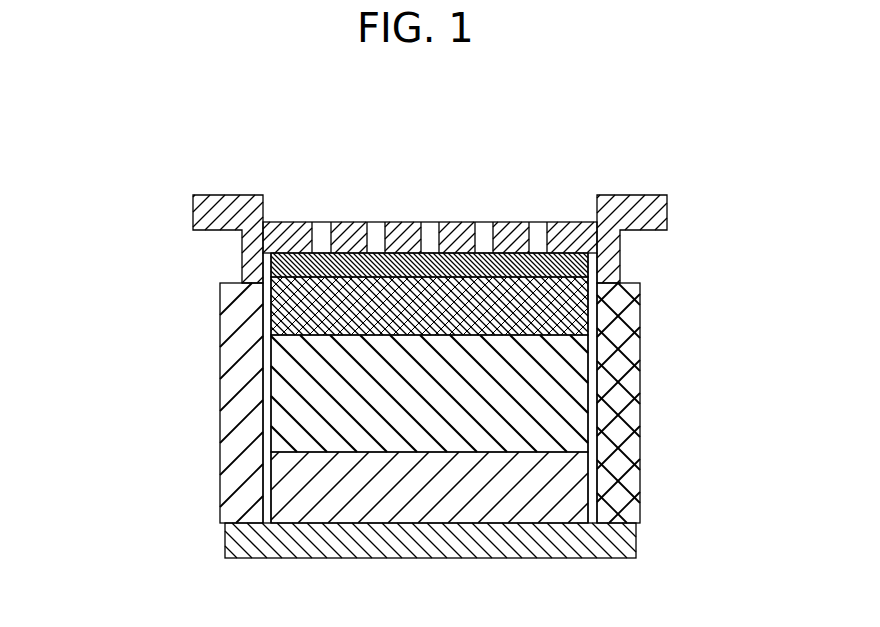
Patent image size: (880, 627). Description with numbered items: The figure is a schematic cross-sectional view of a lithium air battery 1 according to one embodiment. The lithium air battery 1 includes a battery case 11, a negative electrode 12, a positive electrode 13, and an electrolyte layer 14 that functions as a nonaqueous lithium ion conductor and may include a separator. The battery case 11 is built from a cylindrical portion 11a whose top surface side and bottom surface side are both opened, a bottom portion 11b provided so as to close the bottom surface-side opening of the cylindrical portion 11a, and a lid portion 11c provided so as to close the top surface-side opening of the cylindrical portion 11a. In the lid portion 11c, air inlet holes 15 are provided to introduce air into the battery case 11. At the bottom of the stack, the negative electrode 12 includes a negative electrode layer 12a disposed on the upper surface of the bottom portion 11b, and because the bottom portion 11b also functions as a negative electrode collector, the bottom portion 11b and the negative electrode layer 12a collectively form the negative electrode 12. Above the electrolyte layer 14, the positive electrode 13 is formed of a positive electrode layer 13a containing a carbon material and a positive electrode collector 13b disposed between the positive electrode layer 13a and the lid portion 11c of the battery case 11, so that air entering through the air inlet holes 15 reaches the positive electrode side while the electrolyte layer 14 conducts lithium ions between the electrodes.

The lithium air battery 1 is at (190, 135).
The battery case 11 is at (414, 379).
The cylindrical portion 11a is at (240, 377).
The bottom portion 11b is at (420, 504).
The lid portion 11c is at (242, 257).
The negative electrode 12 is at (446, 504).
The negative electrode layer 12a is at (557, 487).
The positive electrode 13 is at (538, 301).
The positive electrode layer 13a is at (580, 317).
The positive electrode collector 13b is at (590, 266).
The electrolyte layer 14 is at (560, 385).
The air inlet holes 15 is at (318, 222).